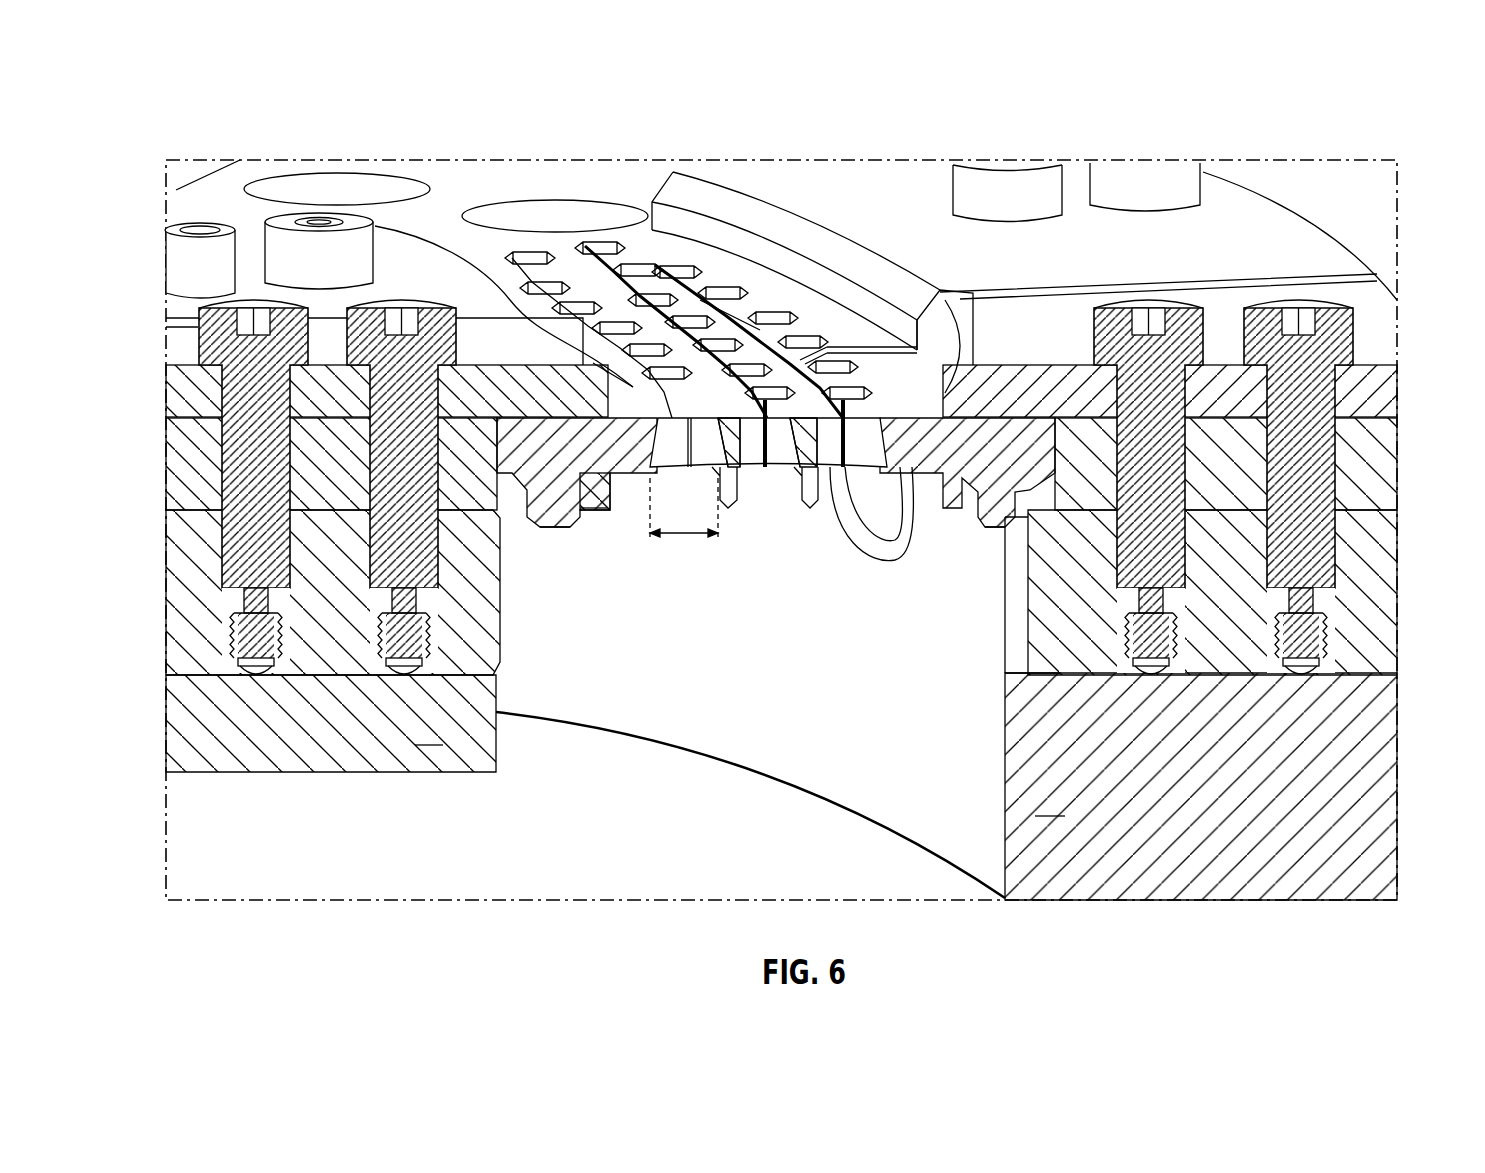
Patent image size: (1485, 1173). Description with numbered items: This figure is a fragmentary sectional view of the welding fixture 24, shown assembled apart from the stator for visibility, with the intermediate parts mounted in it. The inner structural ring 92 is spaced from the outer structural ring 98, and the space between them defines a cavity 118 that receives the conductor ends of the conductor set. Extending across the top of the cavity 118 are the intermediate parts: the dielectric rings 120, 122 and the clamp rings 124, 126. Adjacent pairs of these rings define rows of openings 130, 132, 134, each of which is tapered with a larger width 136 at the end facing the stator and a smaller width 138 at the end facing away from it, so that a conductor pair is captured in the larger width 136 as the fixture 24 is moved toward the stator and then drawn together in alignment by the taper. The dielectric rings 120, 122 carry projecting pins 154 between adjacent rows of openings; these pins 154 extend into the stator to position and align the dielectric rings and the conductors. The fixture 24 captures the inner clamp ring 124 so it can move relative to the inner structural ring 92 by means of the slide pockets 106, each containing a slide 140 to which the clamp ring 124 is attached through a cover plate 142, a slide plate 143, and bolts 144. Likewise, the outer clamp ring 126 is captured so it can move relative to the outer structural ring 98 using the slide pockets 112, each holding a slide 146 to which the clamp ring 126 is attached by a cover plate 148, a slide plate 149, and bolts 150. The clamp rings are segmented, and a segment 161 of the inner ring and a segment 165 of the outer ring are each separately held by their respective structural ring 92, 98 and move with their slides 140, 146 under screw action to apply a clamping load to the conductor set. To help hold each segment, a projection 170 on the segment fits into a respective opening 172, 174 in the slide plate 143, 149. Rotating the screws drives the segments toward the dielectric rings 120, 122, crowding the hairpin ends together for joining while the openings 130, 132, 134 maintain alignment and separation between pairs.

The fixture 24 is at (1352, 206).
The inner structural ring 92 is at (331, 723).
The outer structural ring 98 is at (1201, 708).
The slide pocket 106 is at (328, 662).
The slide pocket 112 is at (1042, 673).
The cavity 118 is at (772, 708).
The dielectric ring 120 is at (595, 245).
The dielectric ring 122 is at (690, 268).
The clamp ring 124 is at (507, 298).
The clamp ring 126 is at (792, 290).
The opening 130 is at (720, 433).
The opening 132 is at (855, 340).
The opening 134 is at (870, 382).
The larger width 136 is at (683, 537).
The smaller width 138 is at (775, 300).
The slide 140 is at (195, 600).
The cover plate 142 is at (430, 300).
The slide plate 143 is at (195, 462).
The bolts 144 is at (347, 215).
The slide 146 is at (1375, 565).
The cover plate 148 is at (1237, 195).
The slide plate 149 is at (1375, 455).
The bolts 150 is at (1178, 306).
The projecting pins 154 is at (807, 487).
The segment 161 is at (592, 350).
The segment 165 is at (913, 382).
The projection 170 is at (548, 530).
The opening 172 is at (578, 510).
The opening 174 is at (965, 548).